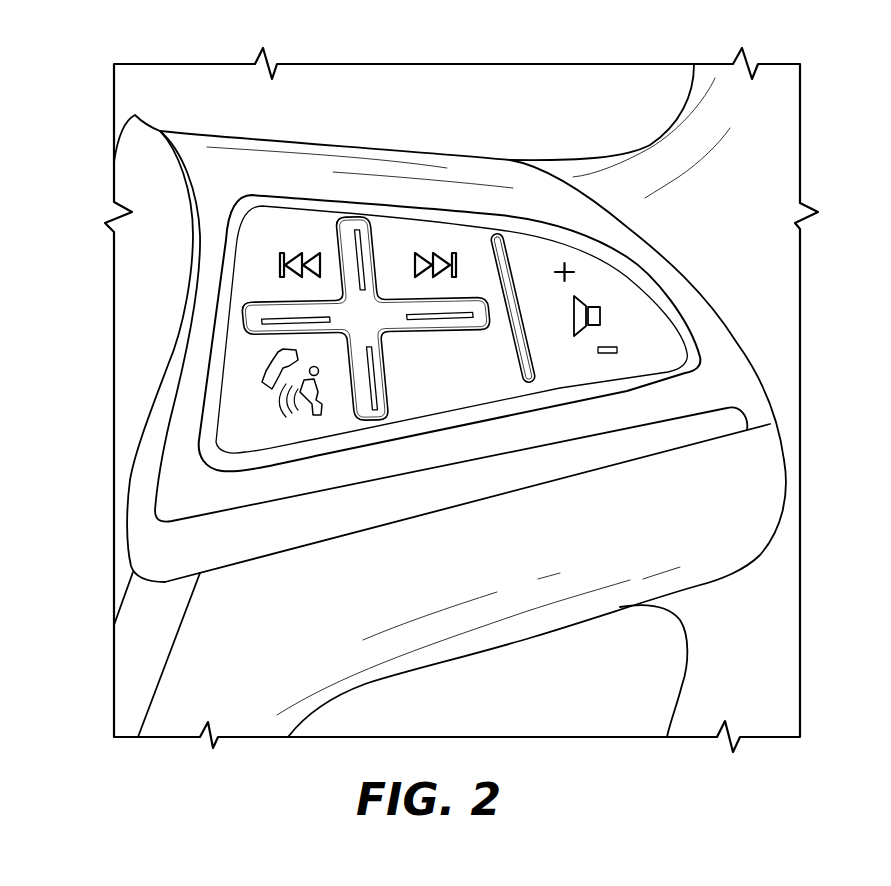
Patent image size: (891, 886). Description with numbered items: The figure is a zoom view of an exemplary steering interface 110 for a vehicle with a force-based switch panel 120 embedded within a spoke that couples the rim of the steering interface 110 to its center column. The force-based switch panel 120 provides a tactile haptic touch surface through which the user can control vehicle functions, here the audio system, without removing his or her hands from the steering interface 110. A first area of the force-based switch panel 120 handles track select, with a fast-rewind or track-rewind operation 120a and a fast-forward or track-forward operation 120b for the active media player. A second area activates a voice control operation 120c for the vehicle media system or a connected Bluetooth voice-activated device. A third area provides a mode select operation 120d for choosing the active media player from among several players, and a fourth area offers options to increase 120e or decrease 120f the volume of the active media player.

The steering interface 110 is at (707, 120).
The force-based switch panel 120 is at (656, 306).
The track-rewind operation 120a is at (303, 230).
The track-forward operation 120b is at (425, 237).
The voice control operation 120c is at (258, 403).
The mode button 120d is at (423, 400).
The volume increase option 120e is at (570, 264).
The volume decrease option 120f is at (653, 348).